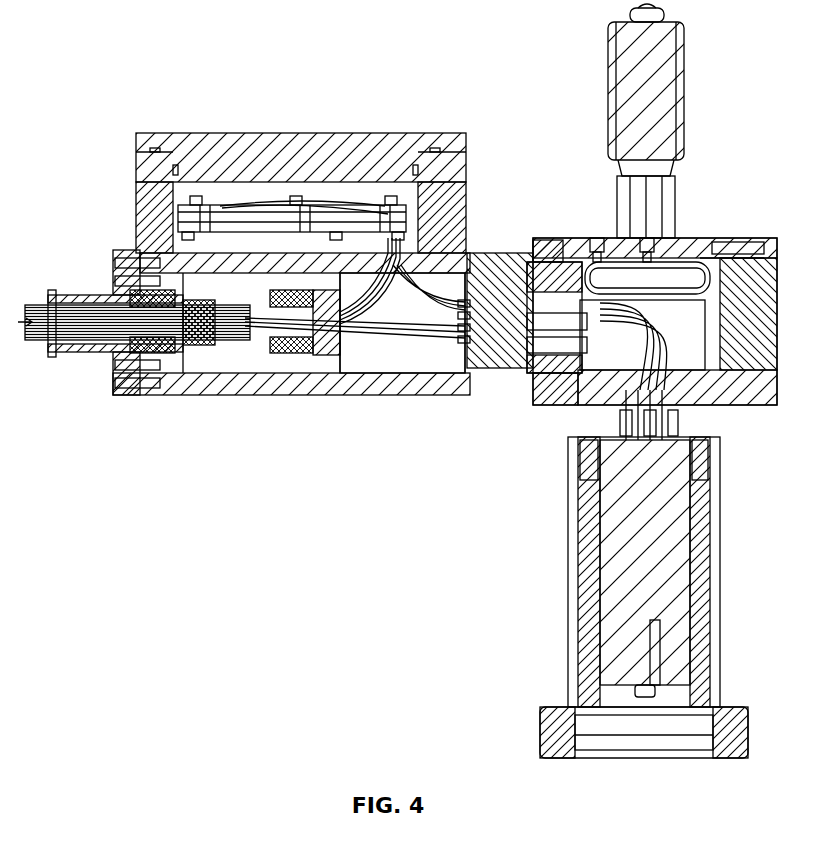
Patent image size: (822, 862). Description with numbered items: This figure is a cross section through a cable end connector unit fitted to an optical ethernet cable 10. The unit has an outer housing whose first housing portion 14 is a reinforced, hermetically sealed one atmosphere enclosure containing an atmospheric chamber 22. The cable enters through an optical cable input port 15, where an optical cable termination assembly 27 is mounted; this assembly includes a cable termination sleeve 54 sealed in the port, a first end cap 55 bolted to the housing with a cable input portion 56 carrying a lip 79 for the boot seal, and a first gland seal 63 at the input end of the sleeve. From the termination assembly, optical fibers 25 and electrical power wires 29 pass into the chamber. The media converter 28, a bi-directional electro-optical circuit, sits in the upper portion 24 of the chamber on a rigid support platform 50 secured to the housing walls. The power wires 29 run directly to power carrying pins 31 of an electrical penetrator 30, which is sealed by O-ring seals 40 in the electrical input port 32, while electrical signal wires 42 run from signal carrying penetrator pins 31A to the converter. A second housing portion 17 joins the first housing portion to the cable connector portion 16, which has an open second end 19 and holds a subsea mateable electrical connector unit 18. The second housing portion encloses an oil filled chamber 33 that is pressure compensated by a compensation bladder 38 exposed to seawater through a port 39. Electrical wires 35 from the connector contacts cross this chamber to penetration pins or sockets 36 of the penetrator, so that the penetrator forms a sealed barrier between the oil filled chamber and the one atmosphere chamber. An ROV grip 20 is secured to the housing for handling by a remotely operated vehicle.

The optical ethernet cable 10 is at (38, 305).
The first housing portion 14 is at (360, 385).
The optical cable input port 15 is at (170, 360).
The cable connector portion 16 is at (715, 545).
The second housing portion 17 is at (690, 258).
The electrical connector unit 18 is at (690, 640).
The open second end 19 is at (672, 728).
The ROV grip 20 is at (660, 95).
The atmospheric chamber 22 is at (425, 370).
The upper portion of chamber 24 is at (300, 180).
The optical fibers 25 is at (355, 308).
The optical cable termination assembly 27 is at (220, 355).
The media converter 28 is at (260, 210).
The electrical power wires 29 is at (188, 200).
The electrical penetrator 30 is at (545, 370).
The power carrying pins 31 is at (480, 330).
The signal carrying penetrator pins 31A is at (470, 345).
The electrical input port 32 is at (535, 280).
The oil filled chamber 33 is at (690, 335).
The electrical wires 35 is at (630, 290).
The penetration pins or sockets 36 is at (610, 350).
The compensation bladder 38 is at (600, 250).
The port 39 is at (740, 256).
The O-ring seals 40 is at (530, 262).
The electrical signal wires 42 is at (430, 300).
The support platform 50 is at (178, 212).
The cable termination sleeve 54 is at (262, 360).
The first end cap 55 is at (125, 355).
The cable input portion 56 is at (65, 352).
The first gland seal 63 is at (140, 380).
The lip 79 is at (55, 300).